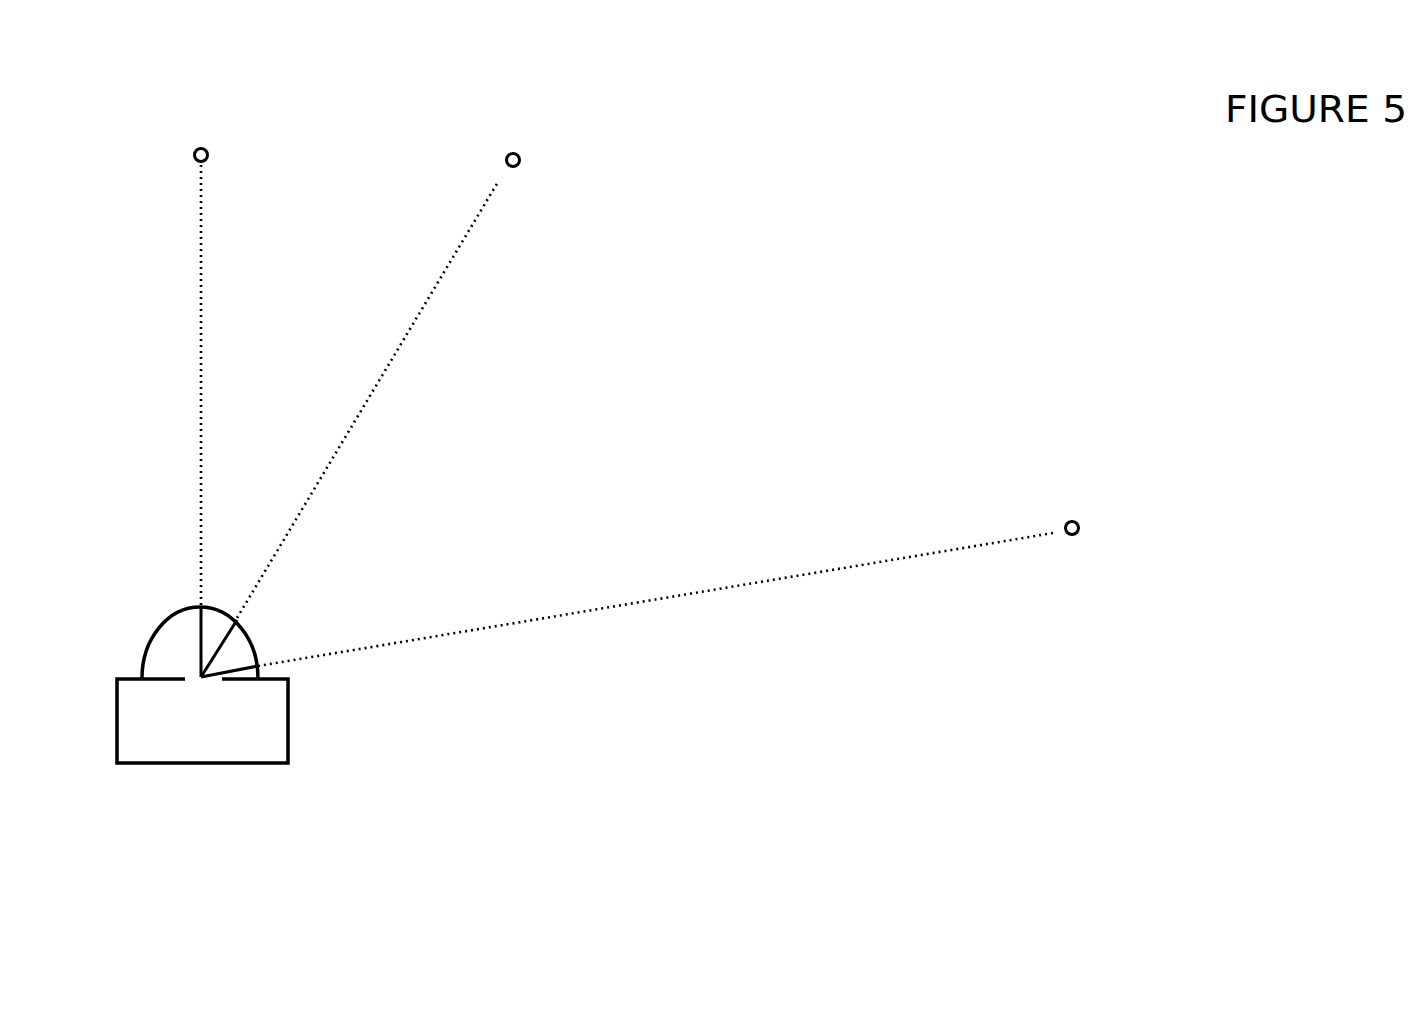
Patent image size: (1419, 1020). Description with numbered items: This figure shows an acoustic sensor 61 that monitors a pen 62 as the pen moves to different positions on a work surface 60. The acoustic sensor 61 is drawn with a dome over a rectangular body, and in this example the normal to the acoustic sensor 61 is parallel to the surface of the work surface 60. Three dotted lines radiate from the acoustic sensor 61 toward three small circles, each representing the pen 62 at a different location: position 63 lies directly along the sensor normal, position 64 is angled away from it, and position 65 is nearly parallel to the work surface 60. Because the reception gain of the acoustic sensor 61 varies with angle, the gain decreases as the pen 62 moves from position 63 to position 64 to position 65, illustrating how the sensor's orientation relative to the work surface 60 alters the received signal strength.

The work surface 60 is at (825, 135).
The acoustic sensor 61 is at (283, 743).
The pen 62 is at (208, 148).
The position 63 is at (203, 360).
The position 64 is at (373, 390).
The position 65 is at (790, 578).